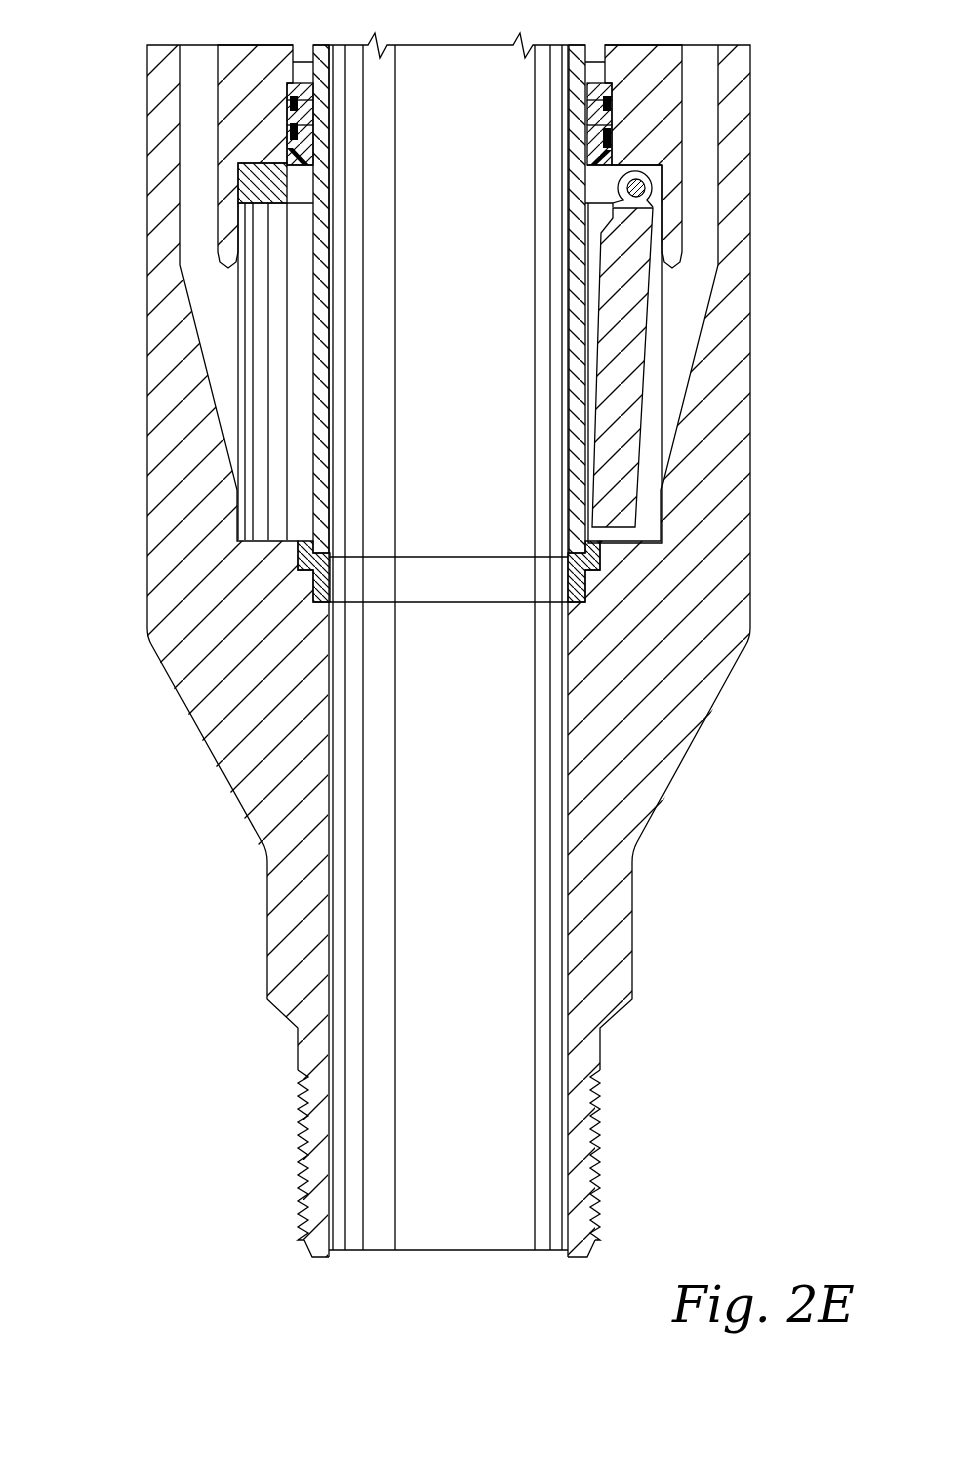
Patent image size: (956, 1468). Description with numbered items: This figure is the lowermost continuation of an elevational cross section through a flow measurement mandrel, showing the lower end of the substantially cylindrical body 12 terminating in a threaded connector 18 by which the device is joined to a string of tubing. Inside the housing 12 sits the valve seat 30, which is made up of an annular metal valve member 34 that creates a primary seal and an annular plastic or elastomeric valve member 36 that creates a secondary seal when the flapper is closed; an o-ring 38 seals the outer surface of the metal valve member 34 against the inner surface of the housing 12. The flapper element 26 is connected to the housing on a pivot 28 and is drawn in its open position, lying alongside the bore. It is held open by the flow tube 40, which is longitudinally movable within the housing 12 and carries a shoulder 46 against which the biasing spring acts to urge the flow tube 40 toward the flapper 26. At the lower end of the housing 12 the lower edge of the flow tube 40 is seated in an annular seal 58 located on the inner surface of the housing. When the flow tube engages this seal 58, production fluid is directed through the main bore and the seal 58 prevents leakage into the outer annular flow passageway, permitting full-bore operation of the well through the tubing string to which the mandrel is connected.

The body 12 is at (744, 393).
The connector 18 is at (600, 1160).
The flapper element 26 is at (617, 358).
The pivot 28 is at (641, 198).
The valve seat 30 is at (267, 105).
The annular metal valve member 34 is at (613, 90).
The annular plastic or elastomeric valve member 36 is at (613, 145).
The o-ring 38 is at (613, 107).
The flow tube 40 is at (322, 367).
The shoulder 46 is at (284, 55).
The annular seal 58 is at (600, 560).